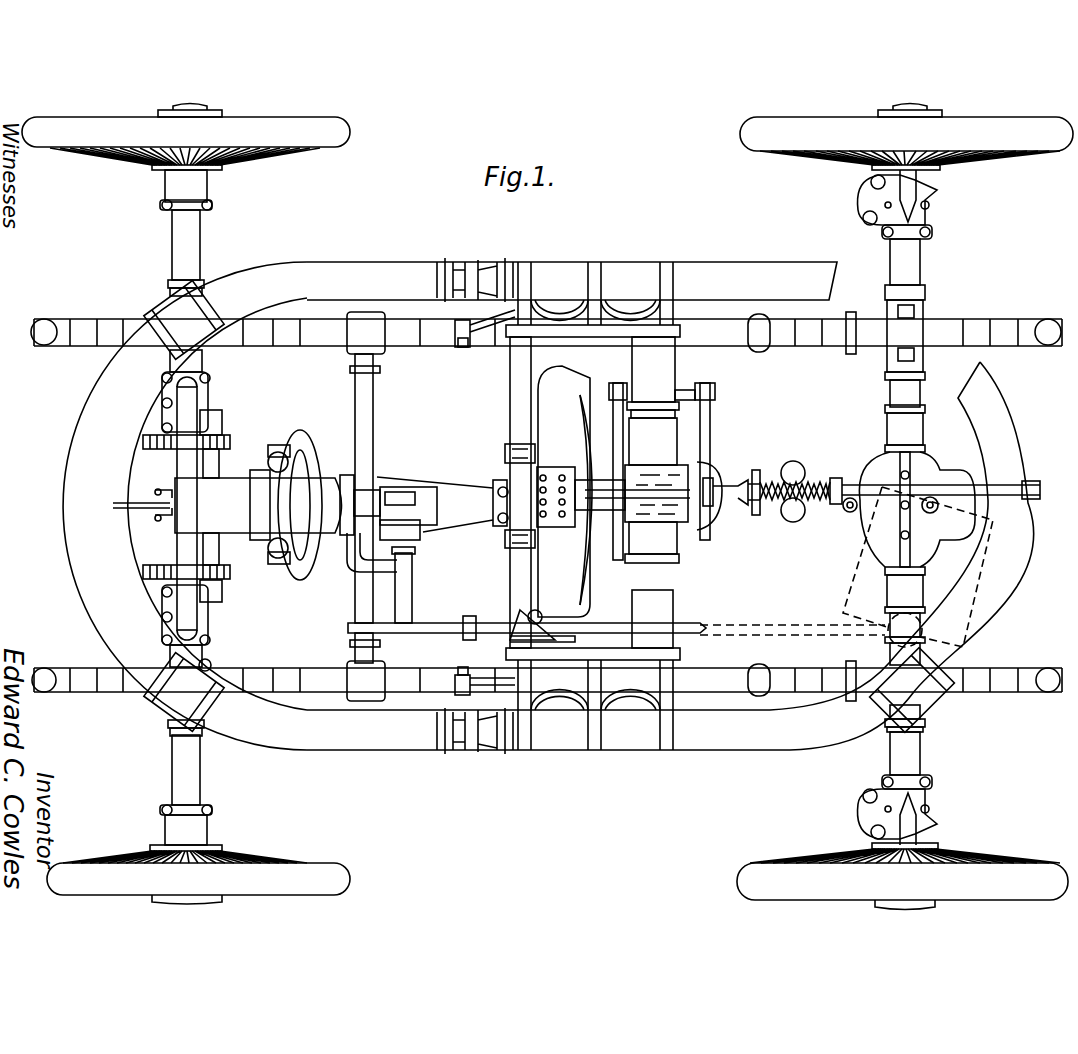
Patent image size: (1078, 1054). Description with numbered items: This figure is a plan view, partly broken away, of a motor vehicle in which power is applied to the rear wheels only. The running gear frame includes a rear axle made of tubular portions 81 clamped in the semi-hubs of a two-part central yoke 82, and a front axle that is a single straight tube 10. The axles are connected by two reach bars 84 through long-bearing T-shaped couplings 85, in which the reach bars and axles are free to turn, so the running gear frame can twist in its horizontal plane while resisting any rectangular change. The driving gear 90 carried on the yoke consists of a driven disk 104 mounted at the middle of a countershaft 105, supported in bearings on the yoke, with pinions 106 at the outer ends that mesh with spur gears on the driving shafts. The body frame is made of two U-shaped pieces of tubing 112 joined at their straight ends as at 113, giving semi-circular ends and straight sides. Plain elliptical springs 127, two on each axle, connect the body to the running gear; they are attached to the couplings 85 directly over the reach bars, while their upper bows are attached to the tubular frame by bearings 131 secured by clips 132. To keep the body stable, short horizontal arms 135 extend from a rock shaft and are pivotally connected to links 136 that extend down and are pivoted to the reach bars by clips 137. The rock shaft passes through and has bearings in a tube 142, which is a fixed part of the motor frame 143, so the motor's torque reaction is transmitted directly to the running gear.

The front axle 10 is at (893, 256).
The tubular portions of the rear axle 81 is at (172, 246).
The central yoke 82 is at (190, 410).
The reach bars 84 is at (728, 350).
The T-shaped couplings 85 is at (200, 362).
The driving gear 90 is at (341, 505).
The driven disk 104 is at (140, 510).
The countershaft 105 is at (219, 460).
The pinions 106 is at (230, 440).
The U-shaped tubing pieces of the body frame 112 is at (63, 497).
The joint of the body frame tubes 113 is at (478, 262).
The springs 127 is at (292, 338).
The bearings 131 is at (208, 665).
The clips 132 is at (170, 300).
The short horizontal arms 135 is at (497, 330).
The links 136 is at (455, 332).
The clips 137 is at (457, 347).
The tube 142 is at (510, 408).
The motor frame 143 is at (676, 607).